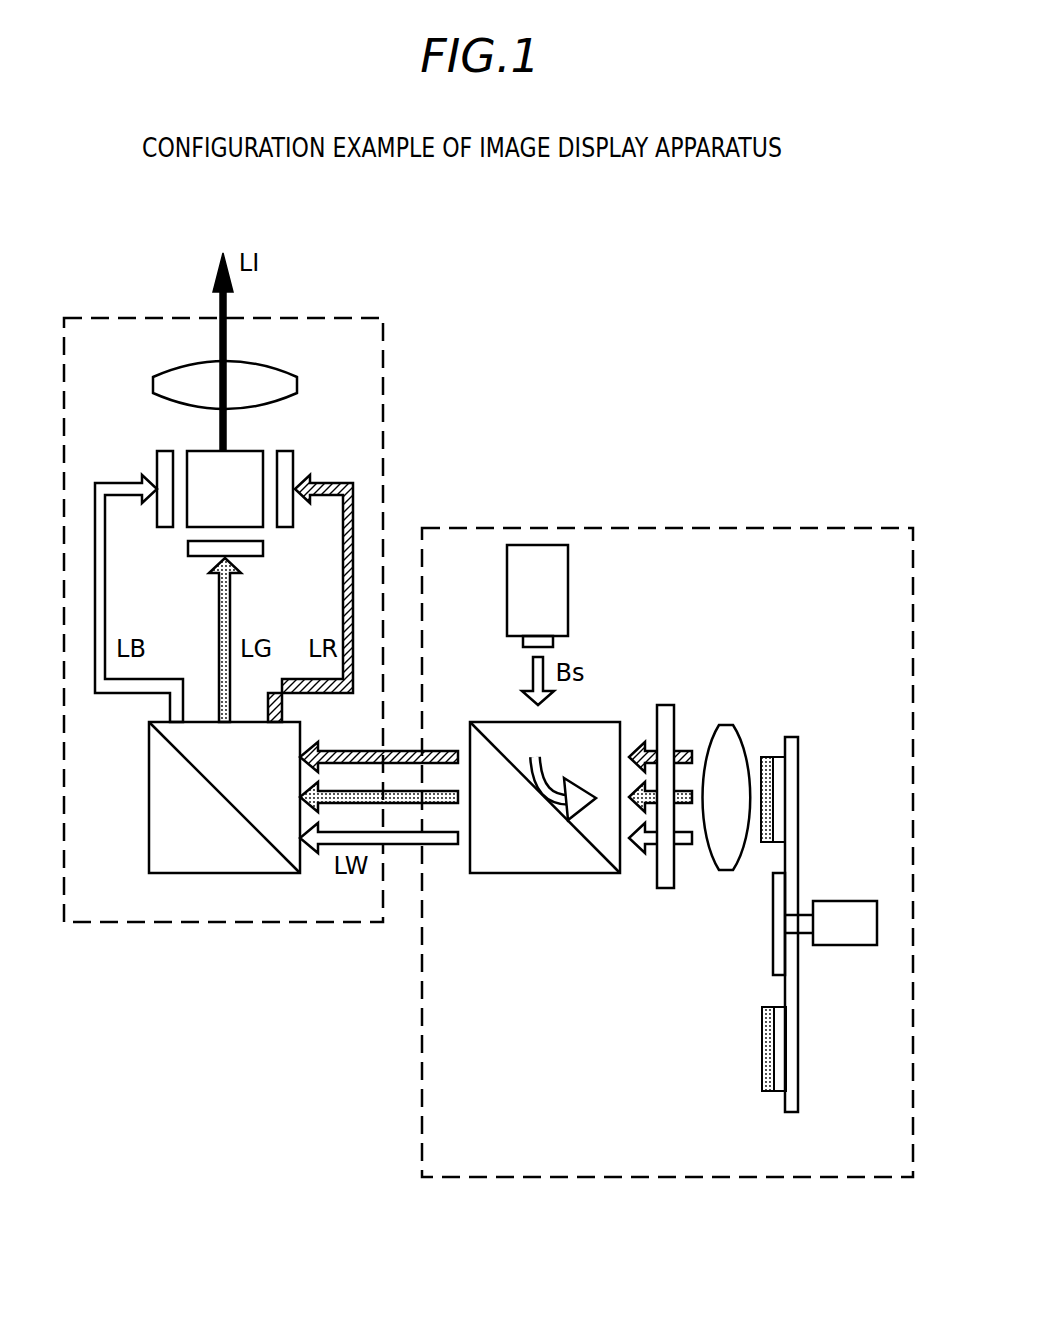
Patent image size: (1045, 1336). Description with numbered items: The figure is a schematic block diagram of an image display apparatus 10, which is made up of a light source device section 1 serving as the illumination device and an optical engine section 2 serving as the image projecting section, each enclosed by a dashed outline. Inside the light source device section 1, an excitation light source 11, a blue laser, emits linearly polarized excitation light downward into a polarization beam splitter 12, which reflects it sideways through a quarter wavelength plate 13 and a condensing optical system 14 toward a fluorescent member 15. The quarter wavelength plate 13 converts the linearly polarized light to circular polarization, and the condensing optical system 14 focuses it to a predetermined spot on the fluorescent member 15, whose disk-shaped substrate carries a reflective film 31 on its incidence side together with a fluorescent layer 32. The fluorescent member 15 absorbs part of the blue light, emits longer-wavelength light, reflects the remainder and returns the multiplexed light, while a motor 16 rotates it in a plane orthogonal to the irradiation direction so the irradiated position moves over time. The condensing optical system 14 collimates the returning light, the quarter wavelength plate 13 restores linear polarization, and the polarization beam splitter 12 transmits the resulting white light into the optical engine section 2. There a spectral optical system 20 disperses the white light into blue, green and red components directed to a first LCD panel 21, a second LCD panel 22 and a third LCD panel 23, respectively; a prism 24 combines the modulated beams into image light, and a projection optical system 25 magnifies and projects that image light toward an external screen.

The image display apparatus 10 is at (565, 288).
The light source device section 1 is at (665, 1177).
The optical engine section 2 is at (270, 922).
The excitation light source 11 is at (562, 588).
The polarization beam splitter 12 is at (518, 874).
The quarter wavelength plate 13 is at (668, 888).
The condensing optical system 14 is at (730, 725).
The fluorescent member 15 is at (740, 1042).
The motor 16 is at (844, 945).
The reflective film 31 is at (782, 757).
The fluorescent layer 32 is at (768, 1091).
The spectral optical system 20 is at (175, 873).
The first LCD panel 21 is at (160, 447).
The second LCD panel 22 is at (263, 542).
The third LCD panel 23 is at (293, 457).
The prism 24 is at (243, 463).
The projection optical system 25 is at (268, 365).